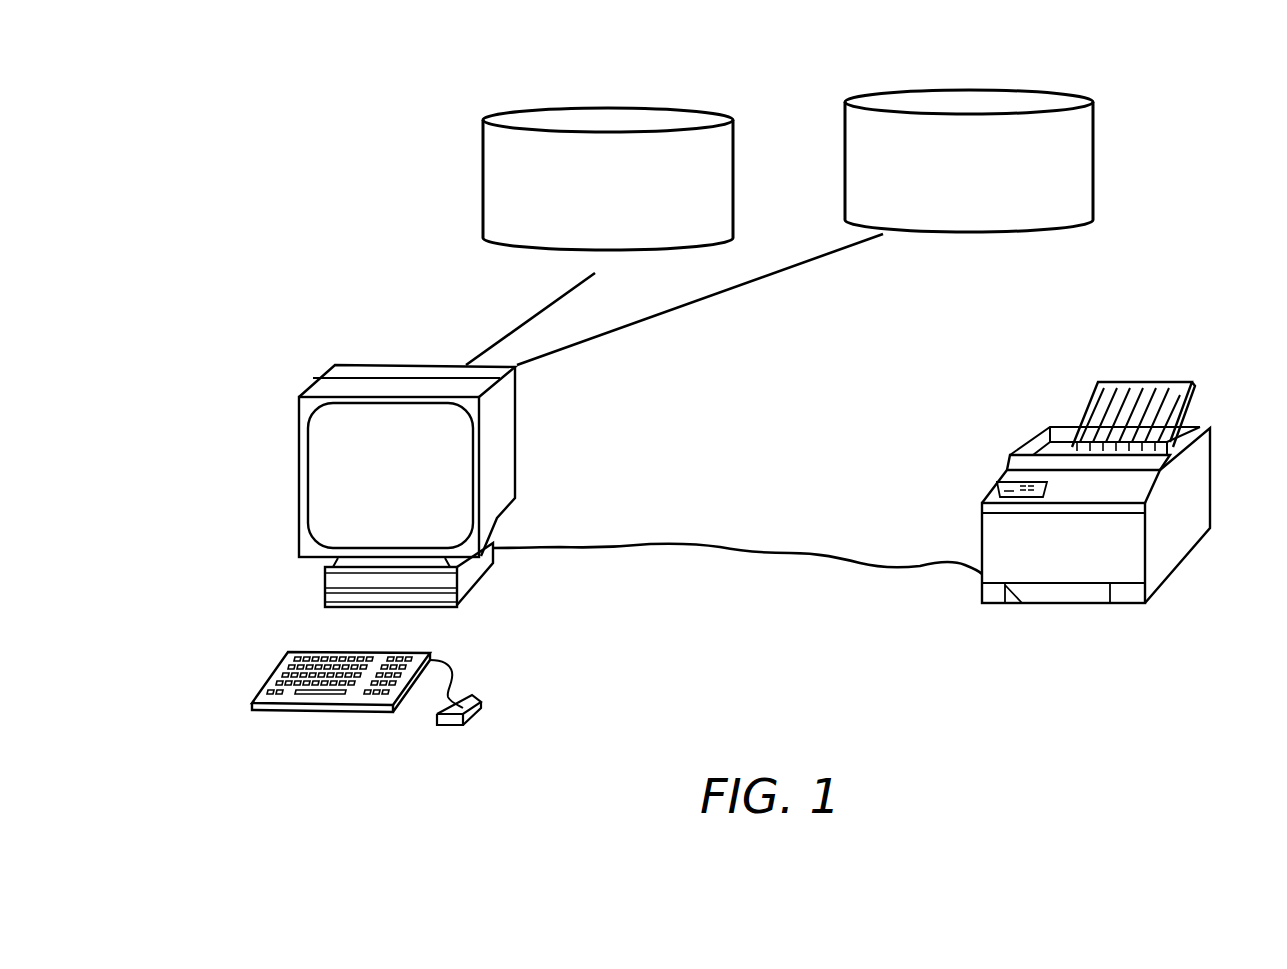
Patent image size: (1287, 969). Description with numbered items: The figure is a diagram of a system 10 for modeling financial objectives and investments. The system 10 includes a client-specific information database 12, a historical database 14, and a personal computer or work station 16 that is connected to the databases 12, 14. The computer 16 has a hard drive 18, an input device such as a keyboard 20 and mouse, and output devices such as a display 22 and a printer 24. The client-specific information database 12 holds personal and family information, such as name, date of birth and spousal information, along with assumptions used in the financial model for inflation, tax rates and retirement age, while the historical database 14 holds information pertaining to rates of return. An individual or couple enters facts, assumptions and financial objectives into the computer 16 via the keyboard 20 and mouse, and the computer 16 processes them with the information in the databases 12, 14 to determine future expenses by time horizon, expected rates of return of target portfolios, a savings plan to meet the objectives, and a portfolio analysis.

The system 10 is at (242, 344).
The client-specific information database 12 is at (713, 111).
The historical database 14 is at (1028, 92).
The personal computer or work station 16 is at (615, 581).
The hard drive 18 is at (478, 590).
The keyboard 20 is at (271, 673).
The display 22 is at (385, 367).
The printer 24 is at (1190, 488).